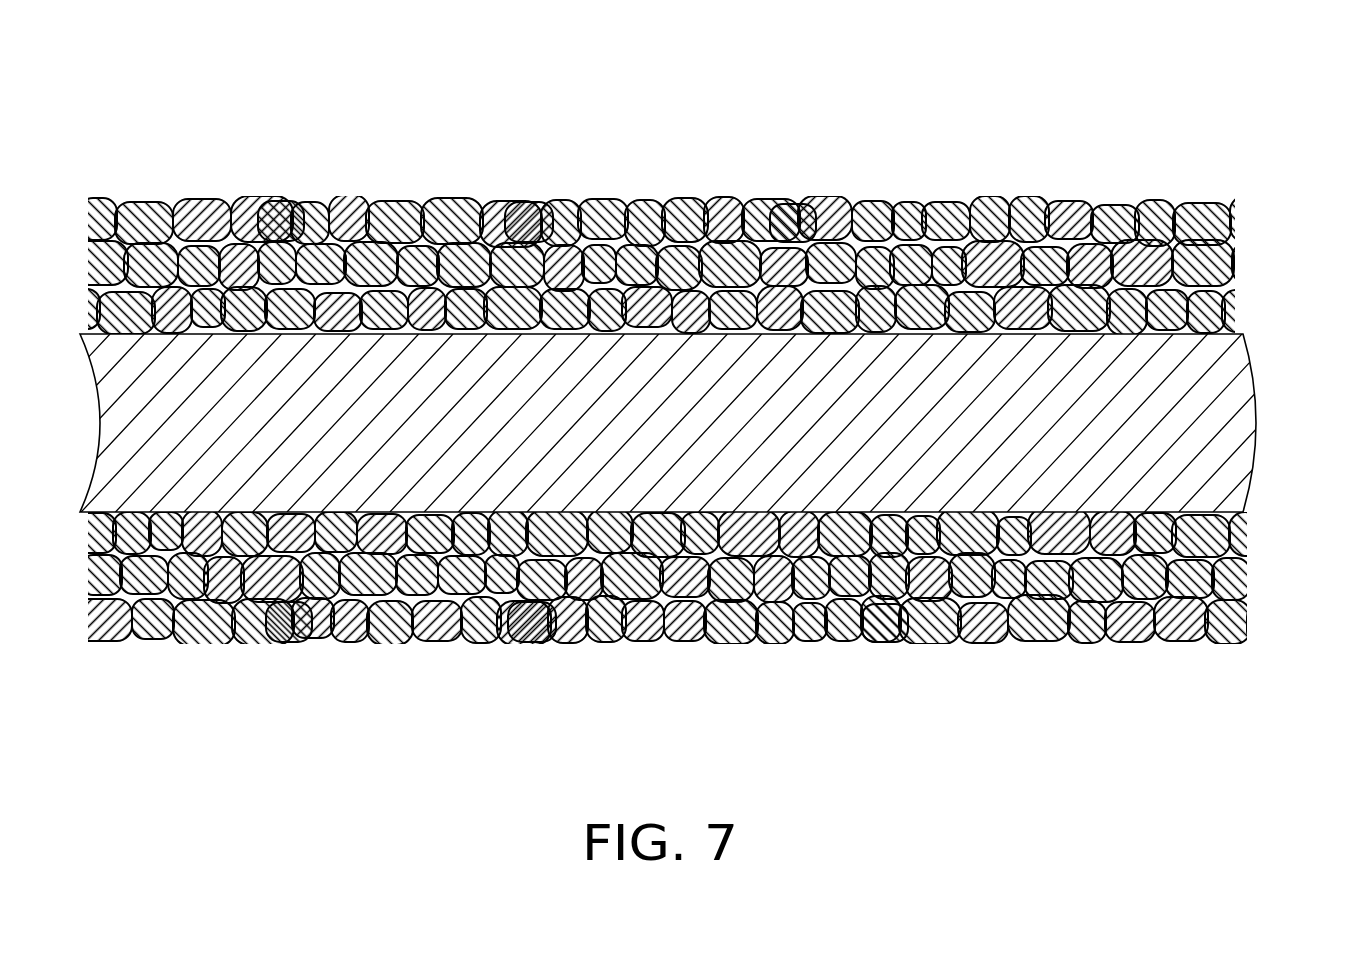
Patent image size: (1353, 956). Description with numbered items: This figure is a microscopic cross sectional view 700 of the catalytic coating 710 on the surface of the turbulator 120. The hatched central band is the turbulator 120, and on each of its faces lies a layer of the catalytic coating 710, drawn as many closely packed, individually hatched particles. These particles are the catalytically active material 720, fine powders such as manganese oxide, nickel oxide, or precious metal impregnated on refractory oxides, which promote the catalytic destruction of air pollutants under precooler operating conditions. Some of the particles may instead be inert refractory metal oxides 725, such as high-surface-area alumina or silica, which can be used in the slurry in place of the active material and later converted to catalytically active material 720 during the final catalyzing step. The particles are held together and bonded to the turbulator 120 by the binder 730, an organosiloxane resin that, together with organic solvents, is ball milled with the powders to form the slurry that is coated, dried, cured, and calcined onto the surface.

The cross sectional view 700 is at (1123, 80).
The catalytic coating 710 is at (1203, 188).
The catalytically active material 720 is at (529, 212).
The inert refractory metal oxides 725 is at (282, 205).
The binder 730 is at (793, 215).
The turbulator 120 is at (220, 447).